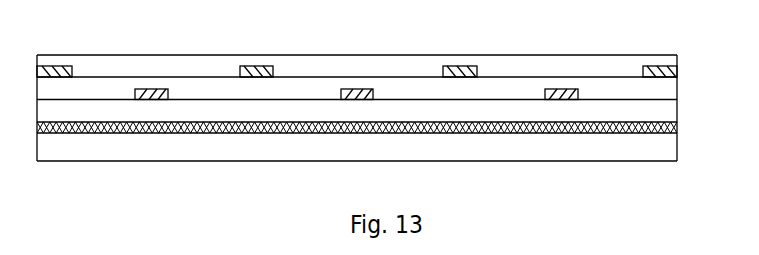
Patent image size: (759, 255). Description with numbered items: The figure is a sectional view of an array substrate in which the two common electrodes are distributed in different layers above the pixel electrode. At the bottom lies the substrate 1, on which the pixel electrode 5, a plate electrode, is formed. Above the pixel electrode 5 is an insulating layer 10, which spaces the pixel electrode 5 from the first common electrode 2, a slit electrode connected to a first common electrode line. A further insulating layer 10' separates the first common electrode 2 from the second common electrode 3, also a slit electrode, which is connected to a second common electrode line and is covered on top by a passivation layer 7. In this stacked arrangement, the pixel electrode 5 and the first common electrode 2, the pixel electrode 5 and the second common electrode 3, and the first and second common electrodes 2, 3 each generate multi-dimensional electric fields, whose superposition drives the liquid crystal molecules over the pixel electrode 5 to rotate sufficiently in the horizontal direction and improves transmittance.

The substrate 1 is at (665, 154).
The first common electrode 2 is at (558, 88).
The second common electrode 3 is at (672, 71).
The pixel electrode 5 is at (672, 127).
The passivation layer 7 is at (389, 63).
The insulating layer 10 is at (378, 113).
The insulating layer 10' is at (381, 86).